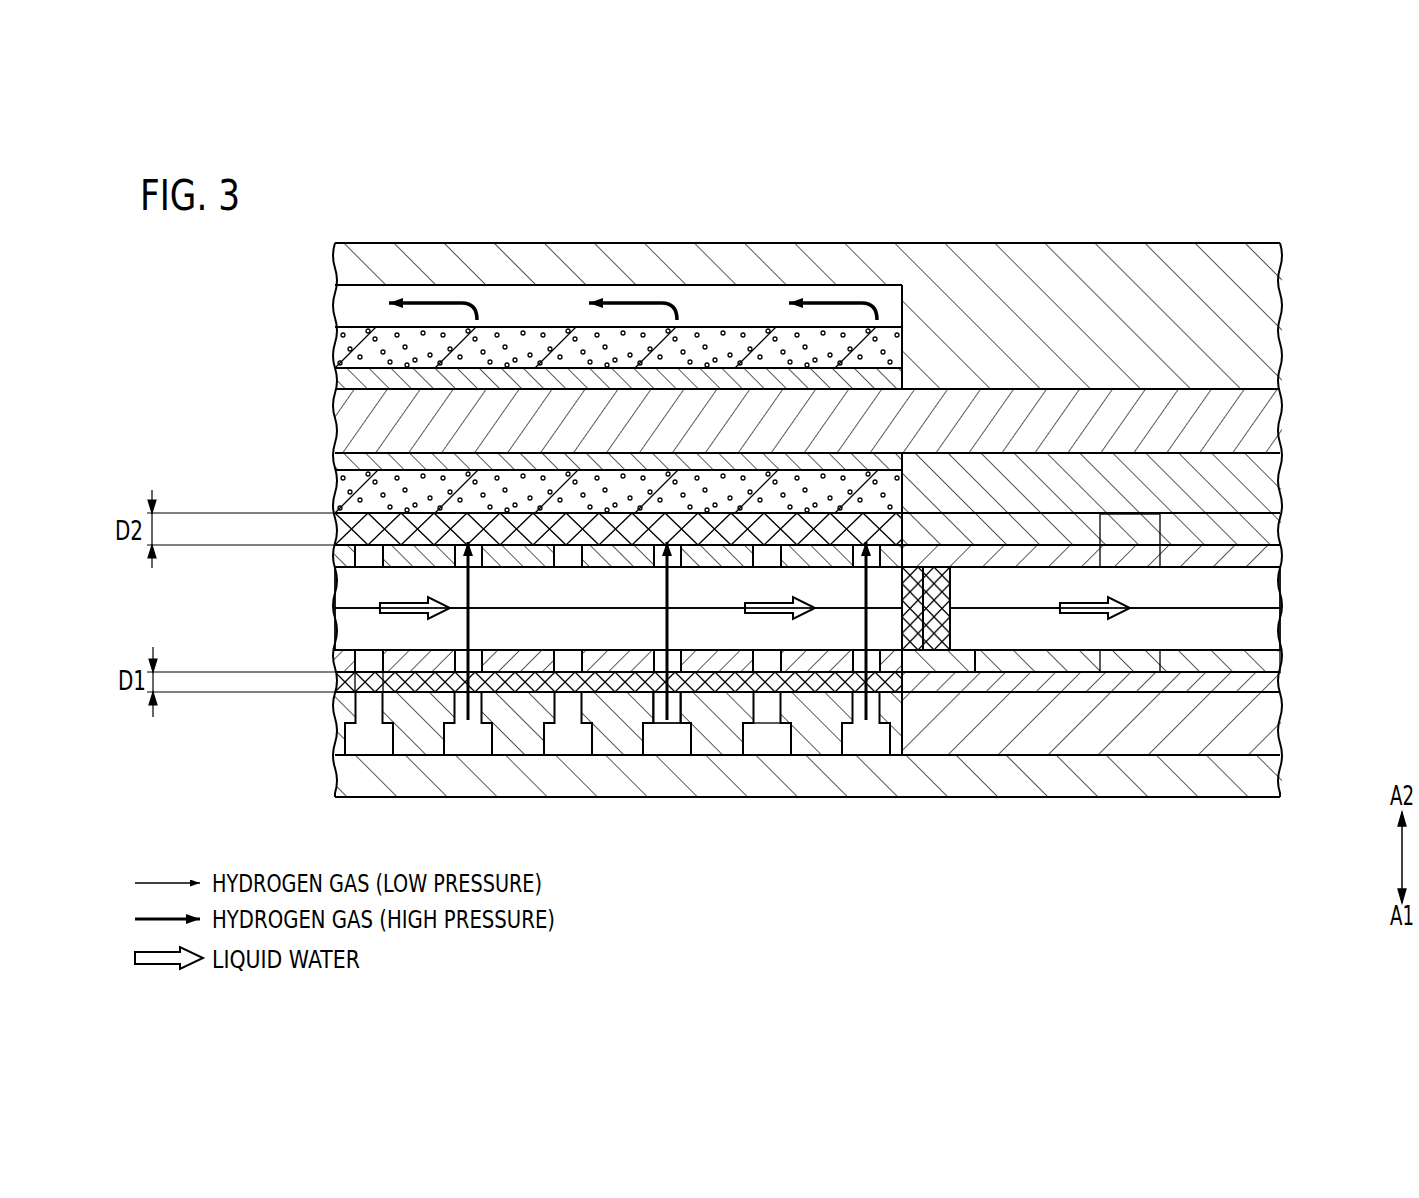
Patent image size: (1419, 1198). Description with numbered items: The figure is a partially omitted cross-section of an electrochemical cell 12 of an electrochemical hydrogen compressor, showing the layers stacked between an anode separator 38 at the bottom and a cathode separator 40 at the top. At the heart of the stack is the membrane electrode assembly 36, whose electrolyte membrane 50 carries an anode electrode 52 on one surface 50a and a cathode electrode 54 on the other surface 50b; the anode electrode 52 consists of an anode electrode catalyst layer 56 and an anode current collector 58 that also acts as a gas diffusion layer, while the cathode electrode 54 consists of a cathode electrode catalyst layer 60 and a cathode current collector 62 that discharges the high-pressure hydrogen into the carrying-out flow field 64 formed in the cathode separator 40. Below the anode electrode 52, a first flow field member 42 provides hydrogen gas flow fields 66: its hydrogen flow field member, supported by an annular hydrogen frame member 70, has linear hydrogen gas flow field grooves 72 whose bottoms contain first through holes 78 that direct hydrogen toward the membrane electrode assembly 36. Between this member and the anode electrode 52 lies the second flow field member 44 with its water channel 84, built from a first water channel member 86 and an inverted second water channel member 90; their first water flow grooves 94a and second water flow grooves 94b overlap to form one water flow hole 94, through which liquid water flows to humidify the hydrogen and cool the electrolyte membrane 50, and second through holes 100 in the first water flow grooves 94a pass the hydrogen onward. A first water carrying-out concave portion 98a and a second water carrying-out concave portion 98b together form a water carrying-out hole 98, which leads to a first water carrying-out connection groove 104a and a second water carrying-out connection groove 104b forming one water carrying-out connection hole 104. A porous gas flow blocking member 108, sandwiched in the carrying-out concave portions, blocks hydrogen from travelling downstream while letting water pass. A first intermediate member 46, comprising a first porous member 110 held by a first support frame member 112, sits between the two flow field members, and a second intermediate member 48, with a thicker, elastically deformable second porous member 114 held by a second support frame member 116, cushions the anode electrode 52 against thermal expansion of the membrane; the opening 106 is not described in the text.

The electrochemical cell 12 is at (392, 210).
The membrane electrode assembly 36 is at (807, 420).
The anode separator 38 is at (807, 776).
The cathode separator 40 is at (352, 272).
The first flow field member 42 is at (611, 723).
The second flow field member 44 is at (1098, 556).
The first intermediate member 46 is at (1283, 680).
The second intermediate member 48 is at (1098, 529).
The electrolyte membrane 50 is at (807, 421).
The one surface of the electrolyte membrane 50a is at (1098, 483).
The other surface of the electrolyte membrane 50b is at (1098, 316).
The anode electrode 52 is at (611, 483).
The cathode electrode 54 is at (611, 358).
The anode electrode catalyst layer 56 is at (611, 461).
The anode current collector 58 is at (611, 491).
The cathode electrode catalyst layer 60 is at (611, 378).
The cathode current collector 62 is at (611, 347).
The carrying-out flow field 64 is at (611, 306).
The hydrogen gas flow field 66 is at (769, 745).
The hydrogen frame member 70 is at (1098, 723).
The hydrogen gas flow field groove 72 is at (648, 740).
The first through hole 78 is at (678, 712).
The water channel 84 is at (1145, 655).
The first water channel member 86 is at (611, 661).
The second water channel member 90 is at (611, 556).
The water flow hole 94 is at (259, 568).
The first water flow groove 94a is at (348, 627).
The second water flow groove 94b is at (348, 588).
The water carrying-out hole 98 is at (1002, 861).
The first water carrying-out concave portion 98a is at (947, 633).
The second water carrying-out concave portion 98b is at (923, 570).
The second through hole 100 is at (611, 682).
The water carrying-out connection hole 104 is at (1361, 567).
The first water carrying-out connection groove 104a is at (1253, 626).
The second water carrying-out connection groove 104b is at (1262, 590).
The support plate opening 106 is at (568, 563).
The gas flow blocking member 108 is at (926, 608).
The first porous member 110 is at (373, 683).
The first support frame member 112 is at (1098, 682).
The second porous member 114 is at (611, 529).
The second support frame member 116 is at (1108, 538).